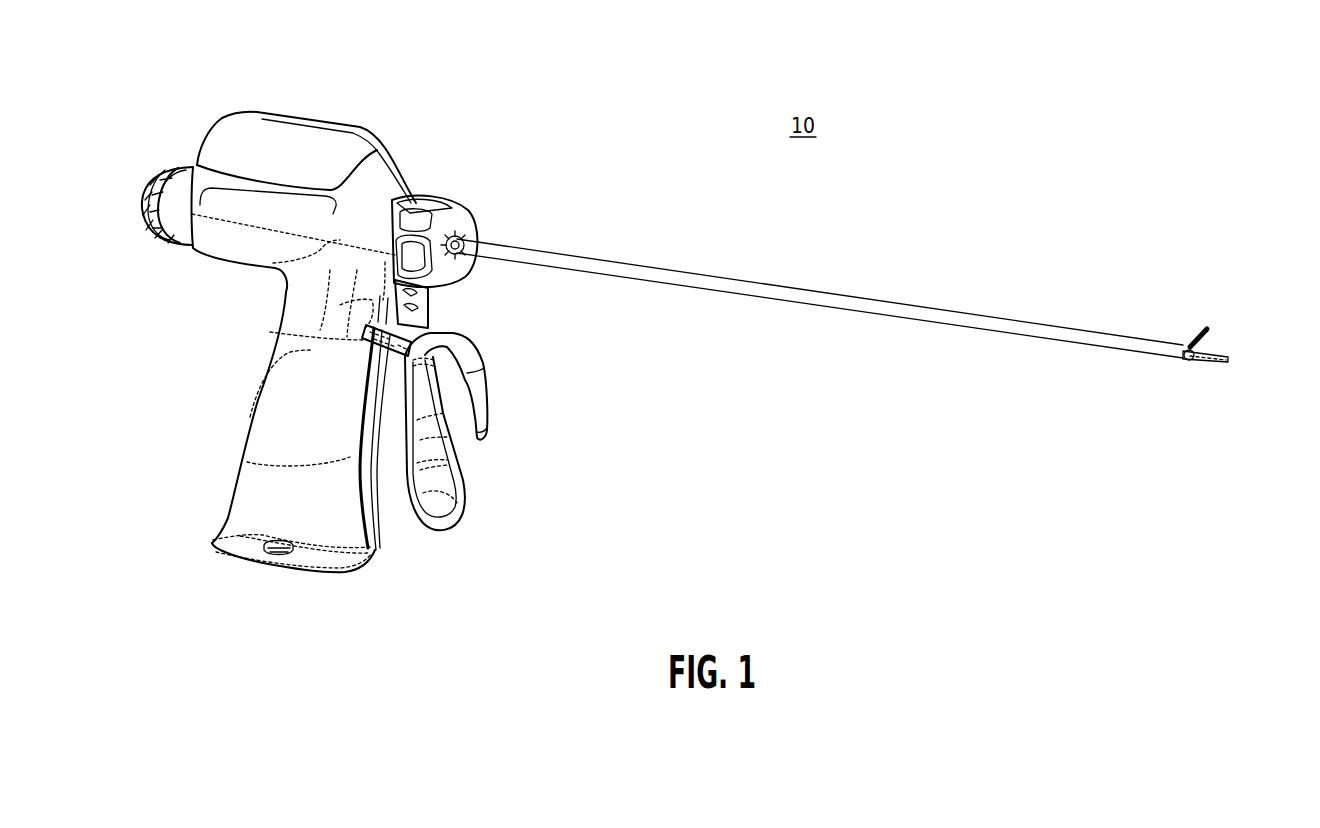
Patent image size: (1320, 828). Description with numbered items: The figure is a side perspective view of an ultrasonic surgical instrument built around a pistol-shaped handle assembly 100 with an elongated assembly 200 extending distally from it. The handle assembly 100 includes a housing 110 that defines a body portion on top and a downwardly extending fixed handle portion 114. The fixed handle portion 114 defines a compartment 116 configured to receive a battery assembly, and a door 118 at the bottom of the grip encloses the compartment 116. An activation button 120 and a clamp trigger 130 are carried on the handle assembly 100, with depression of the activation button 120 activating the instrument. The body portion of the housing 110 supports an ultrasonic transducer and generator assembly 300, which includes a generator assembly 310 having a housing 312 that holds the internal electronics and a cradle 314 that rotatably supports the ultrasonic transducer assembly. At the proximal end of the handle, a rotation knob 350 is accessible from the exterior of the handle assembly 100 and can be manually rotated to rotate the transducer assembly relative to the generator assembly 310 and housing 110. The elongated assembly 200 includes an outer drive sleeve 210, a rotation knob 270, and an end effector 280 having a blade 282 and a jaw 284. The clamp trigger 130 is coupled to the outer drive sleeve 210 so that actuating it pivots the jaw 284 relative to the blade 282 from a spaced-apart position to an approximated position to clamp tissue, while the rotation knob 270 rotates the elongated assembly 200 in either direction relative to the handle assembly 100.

The handle assembly 100 is at (347, 401).
The housing 110 is at (246, 222).
The fixed handle portion 114 is at (268, 435).
The compartment 116 is at (266, 490).
The door 118 is at (289, 560).
The activation button 120 is at (428, 294).
The clamp trigger 130 is at (447, 503).
The elongated assembly 200 is at (840, 316).
The outer drive sleeve 210 is at (905, 308).
The rotation knob 270 is at (462, 224).
The end effector 280 is at (1235, 354).
The blade 282 is at (1197, 365).
The jaw 284 is at (1210, 331).
The ultrasonic transducer and generator assembly 300 is at (306, 178).
The generator assembly 310 is at (421, 136).
The housing 312 is at (268, 126).
The cradle 314 is at (181, 238).
The rotation knob 350 is at (146, 215).